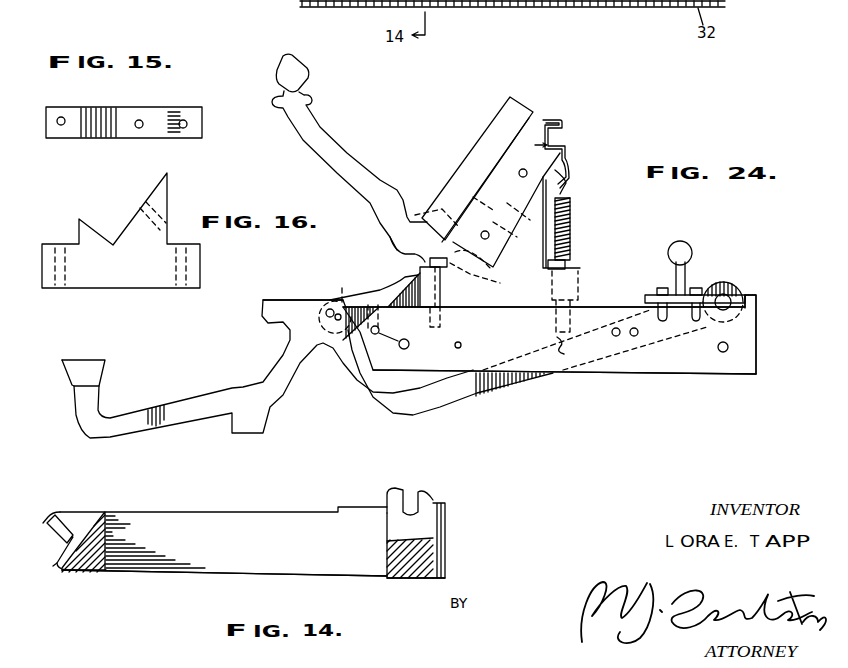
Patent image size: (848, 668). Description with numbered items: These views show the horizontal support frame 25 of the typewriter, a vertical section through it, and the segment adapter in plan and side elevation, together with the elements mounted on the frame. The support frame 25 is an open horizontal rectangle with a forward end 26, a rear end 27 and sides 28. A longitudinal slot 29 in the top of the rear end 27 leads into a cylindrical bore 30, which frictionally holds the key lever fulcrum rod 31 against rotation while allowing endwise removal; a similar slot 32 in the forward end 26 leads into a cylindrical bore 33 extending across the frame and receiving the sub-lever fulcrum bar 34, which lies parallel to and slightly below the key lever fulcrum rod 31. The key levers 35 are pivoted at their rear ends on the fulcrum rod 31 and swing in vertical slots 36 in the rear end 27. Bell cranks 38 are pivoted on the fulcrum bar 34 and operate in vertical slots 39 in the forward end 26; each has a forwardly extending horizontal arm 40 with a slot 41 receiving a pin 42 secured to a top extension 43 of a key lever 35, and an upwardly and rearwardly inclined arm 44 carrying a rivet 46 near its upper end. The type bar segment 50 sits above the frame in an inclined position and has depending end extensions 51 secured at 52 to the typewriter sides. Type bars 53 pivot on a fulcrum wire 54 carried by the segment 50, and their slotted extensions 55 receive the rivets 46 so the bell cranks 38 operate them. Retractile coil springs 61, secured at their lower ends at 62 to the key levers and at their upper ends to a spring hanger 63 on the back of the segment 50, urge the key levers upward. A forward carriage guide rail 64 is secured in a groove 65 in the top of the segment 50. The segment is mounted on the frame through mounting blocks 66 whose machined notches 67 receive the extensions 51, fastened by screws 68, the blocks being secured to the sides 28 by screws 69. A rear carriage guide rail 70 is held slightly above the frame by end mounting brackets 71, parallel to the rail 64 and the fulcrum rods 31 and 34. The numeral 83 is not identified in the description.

In FIG. 24, the horizontal support frame 25 is at (620, 385).
In FIG. 14, the horizontal support frame 25 is at (299, 508).
In FIG. 14, the forward end 26 is at (90, 573).
In FIG. 14, the rear end 27 is at (403, 580).
In FIG. 24, the sides 28 is at (557, 375).
In FIG. 14, the sides 28 is at (248, 511).
In FIG. 24, the longitudinal slot 29 is at (726, 292).
In FIG. 14, the longitudinal slot 29 is at (408, 492).
In FIG. 24, the cylindrical bore 30 is at (758, 311).
In FIG. 14, the cylindrical bore 30 is at (446, 526).
In FIG. 24, the key lever fulcrum rod 31 is at (742, 295).
In FIG. 24, the slot 32 is at (367, 302).
In FIG. 14, the slot 32 is at (73, 512).
In FIG. 24, the cylindrical bore 33 is at (410, 343).
In FIG. 14, the cylindrical bore 33 is at (42, 572).
In FIG. 24, the sub-lever fulcrum bar 34 is at (372, 307).
In FIG. 24, the key levers 35 is at (477, 393).
In FIG. 14, the vertical slots 36 is at (434, 503).
In FIG. 24, the bell cranks 38 is at (428, 264).
In FIG. 14, the vertical slots 39 is at (104, 511).
In FIG. 24, the horizontal arms 40 is at (342, 330).
In FIG. 24, the slots 41 is at (340, 286).
In FIG. 24, the pins 42 is at (328, 308).
In FIG. 24, the top extensions 43 is at (304, 313).
In FIG. 24, the inclined arms 44 is at (441, 298).
In FIG. 24, the rivets 46 is at (484, 266).
In FIG. 24, the type bar segment 50 is at (565, 147).
In FIG. 24, the depending end extensions 51 is at (506, 210).
In FIG. 24, the securing point 52 is at (491, 218).
In FIG. 24, the type bars 53 is at (363, 165).
In FIG. 24, the fulcrum wire 54 is at (440, 213).
In FIG. 24, the slotted extensions 55 is at (480, 282).
In FIG. 24, the retractile coil springs 61 is at (572, 207).
In FIG. 24, the spring lower end attachment 62 is at (577, 352).
In FIG. 24, the spring hanger 63 is at (568, 190).
In FIG. 24, the forward carriage guide rail 64 is at (562, 121).
In FIG. 24, the groove 65 is at (532, 118).
In FIG. 15, the mounting blocks 66 is at (97, 147).
In FIG. 16, the mounting blocks 66 is at (108, 283).
In FIG. 24, the mounting blocks 66 is at (529, 307).
In FIG. 15, the notches 67 is at (108, 140).
In FIG. 16, the notches 67 is at (100, 236).
In FIG. 24, the notches 67 is at (572, 231).
In FIG. 24, the screws 68 is at (472, 185).
In FIG. 24, the screws 69 is at (568, 265).
In FIG. 24, the rear carriage guide rail 70 is at (680, 250).
In FIG. 24, the end mounting brackets 71 is at (672, 285).
In FIG. 14, the block bottom 83 is at (446, 557).